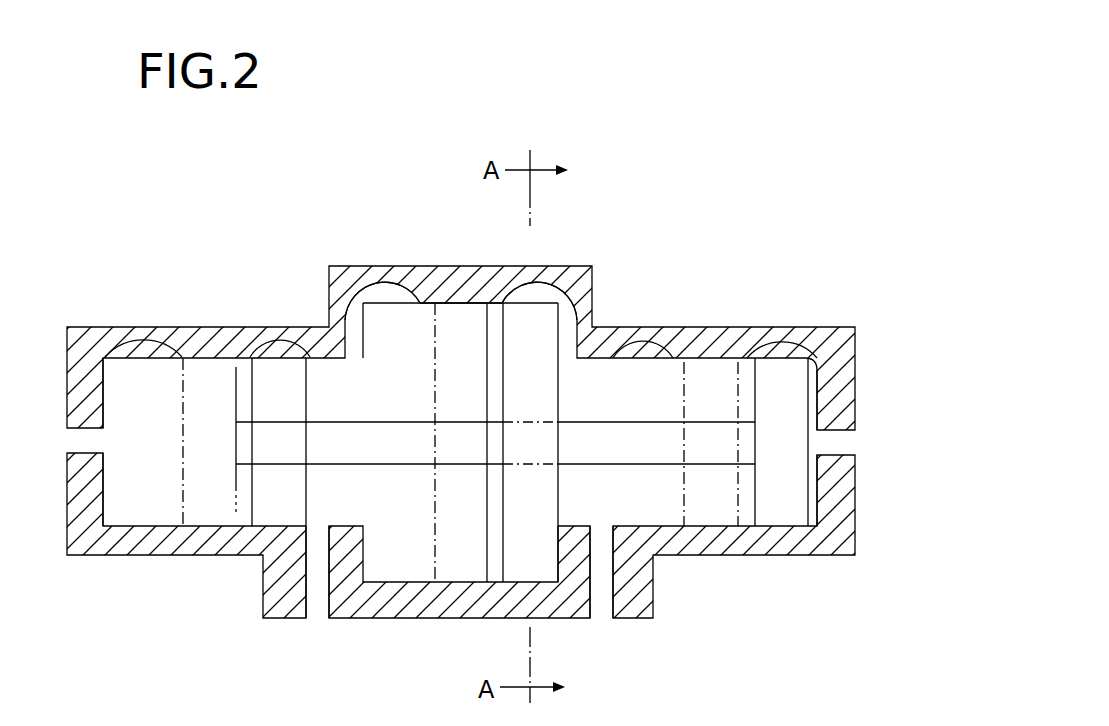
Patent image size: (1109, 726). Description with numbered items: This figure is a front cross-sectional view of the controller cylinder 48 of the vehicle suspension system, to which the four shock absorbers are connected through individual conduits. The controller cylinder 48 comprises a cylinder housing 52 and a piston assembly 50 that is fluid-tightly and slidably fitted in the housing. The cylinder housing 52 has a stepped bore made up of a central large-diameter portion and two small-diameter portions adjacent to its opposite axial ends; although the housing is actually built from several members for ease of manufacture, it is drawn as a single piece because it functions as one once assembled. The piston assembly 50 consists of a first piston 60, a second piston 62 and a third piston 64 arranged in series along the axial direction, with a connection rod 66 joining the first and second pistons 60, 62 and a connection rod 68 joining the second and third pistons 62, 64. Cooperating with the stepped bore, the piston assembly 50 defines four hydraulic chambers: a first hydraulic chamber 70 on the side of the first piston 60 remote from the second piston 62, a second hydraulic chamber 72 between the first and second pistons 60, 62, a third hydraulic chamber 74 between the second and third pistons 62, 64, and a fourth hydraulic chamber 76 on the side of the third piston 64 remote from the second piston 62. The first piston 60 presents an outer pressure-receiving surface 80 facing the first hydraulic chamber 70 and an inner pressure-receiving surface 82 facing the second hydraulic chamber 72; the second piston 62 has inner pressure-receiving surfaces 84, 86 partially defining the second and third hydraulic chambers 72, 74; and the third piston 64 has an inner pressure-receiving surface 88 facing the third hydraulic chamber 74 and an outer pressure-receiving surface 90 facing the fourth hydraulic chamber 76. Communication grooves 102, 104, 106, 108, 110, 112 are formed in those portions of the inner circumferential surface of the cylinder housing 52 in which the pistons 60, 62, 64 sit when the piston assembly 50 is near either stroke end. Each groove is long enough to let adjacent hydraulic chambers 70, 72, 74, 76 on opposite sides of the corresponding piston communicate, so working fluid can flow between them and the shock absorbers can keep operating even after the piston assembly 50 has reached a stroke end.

The controller cylinder 48 is at (648, 228).
The piston assembly 50 is at (236, 488).
The cylinder housing 52 is at (458, 280).
The first piston 60 is at (277, 373).
The second piston 62 is at (590, 268).
The third piston 64 is at (783, 378).
The connection rod 66 is at (412, 450).
The connection rod 68 is at (714, 442).
The first hydraulic chamber 70 is at (123, 505).
The second hydraulic chamber 72 is at (393, 558).
The third hydraulic chamber 74 is at (627, 495).
The fourth hydraulic chamber 76 is at (810, 382).
The outer pressure-receiving surface 80 is at (248, 508).
The inner pressure-receiving surface 82 is at (306, 497).
The inner pressure-receiving surface 84 is at (505, 545).
The inner pressure-receiving surface 86 is at (557, 543).
The inner pressure-receiving surface 88 is at (742, 493).
The outer pressure-receiving surface 90 is at (805, 500).
The communication groove 102 is at (132, 347).
The communication groove 104 is at (293, 350).
The communication groove 106 is at (400, 286).
The communication groove 108 is at (520, 290).
The communication groove 110 is at (640, 353).
The communication groove 112 is at (765, 345).